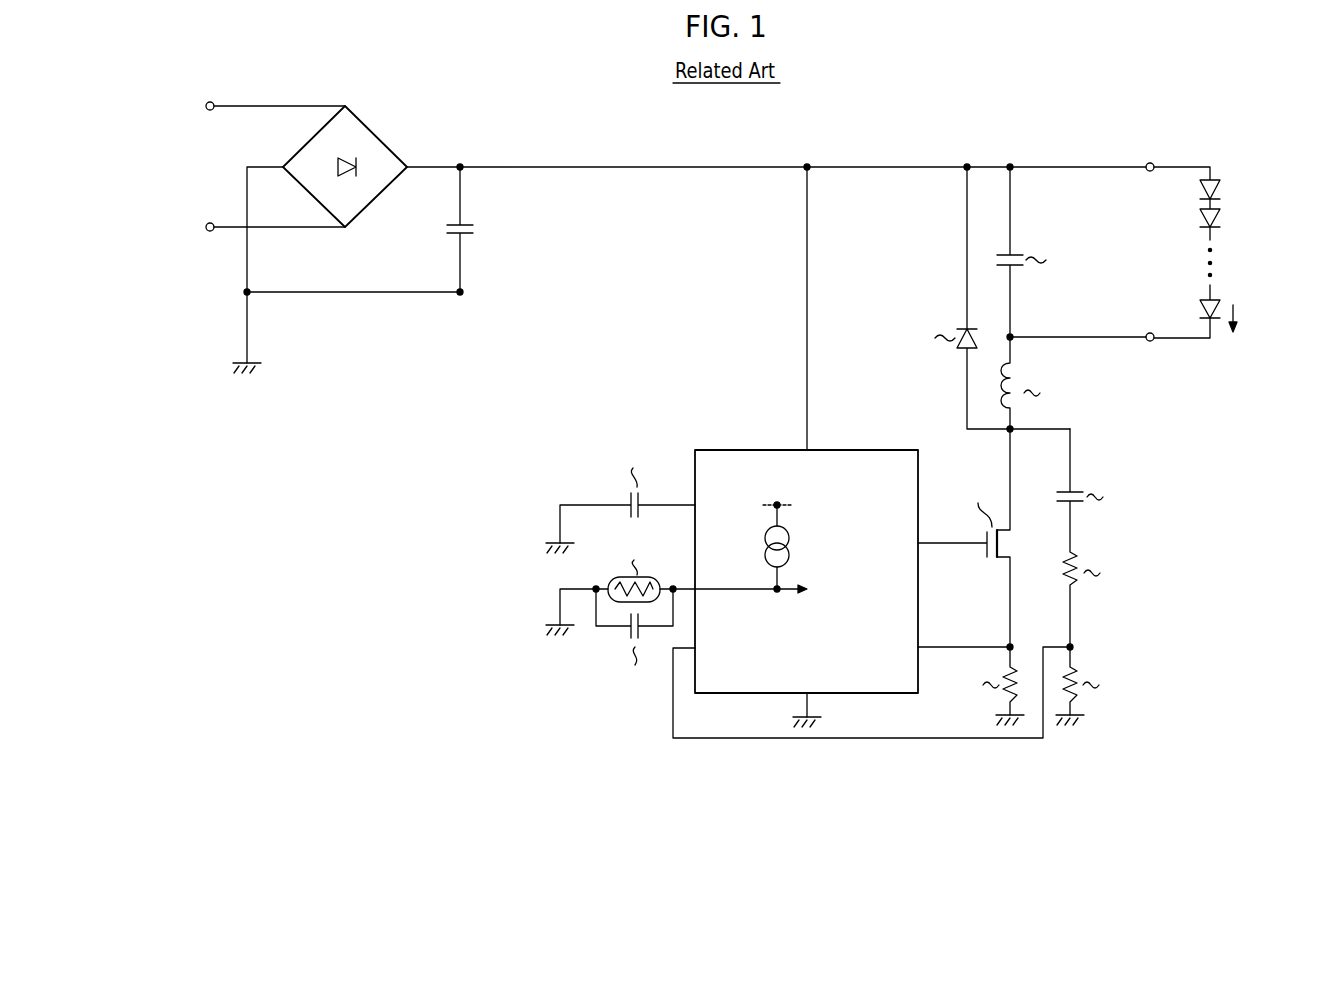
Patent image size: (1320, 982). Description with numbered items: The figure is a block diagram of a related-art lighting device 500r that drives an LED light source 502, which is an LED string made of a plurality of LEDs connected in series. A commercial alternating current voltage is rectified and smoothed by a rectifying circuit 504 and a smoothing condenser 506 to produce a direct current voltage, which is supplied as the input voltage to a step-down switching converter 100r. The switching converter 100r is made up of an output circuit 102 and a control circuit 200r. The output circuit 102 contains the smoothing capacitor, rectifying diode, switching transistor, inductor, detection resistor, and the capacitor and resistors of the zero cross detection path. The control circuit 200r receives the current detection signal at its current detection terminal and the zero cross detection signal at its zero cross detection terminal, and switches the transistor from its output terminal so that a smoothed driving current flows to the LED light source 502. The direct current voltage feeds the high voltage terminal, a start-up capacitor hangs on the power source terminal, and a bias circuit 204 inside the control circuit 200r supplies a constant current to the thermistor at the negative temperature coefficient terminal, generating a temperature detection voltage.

The lighting device 500r is at (1152, 822).
The rectifying circuit 504 is at (367, 123).
The smoothing condenser 506 is at (478, 232).
The LED light source 502 is at (1227, 248).
The switching converter 100r is at (1115, 790).
The control circuit 200r is at (743, 449).
The bias circuit 204 is at (793, 547).
The output circuit 102 is at (1115, 752).